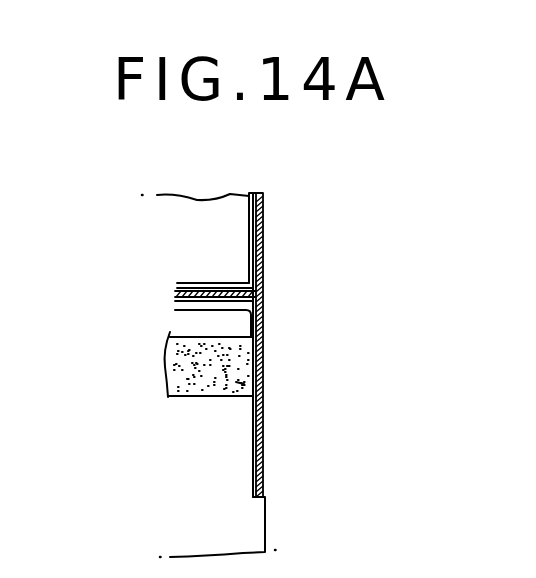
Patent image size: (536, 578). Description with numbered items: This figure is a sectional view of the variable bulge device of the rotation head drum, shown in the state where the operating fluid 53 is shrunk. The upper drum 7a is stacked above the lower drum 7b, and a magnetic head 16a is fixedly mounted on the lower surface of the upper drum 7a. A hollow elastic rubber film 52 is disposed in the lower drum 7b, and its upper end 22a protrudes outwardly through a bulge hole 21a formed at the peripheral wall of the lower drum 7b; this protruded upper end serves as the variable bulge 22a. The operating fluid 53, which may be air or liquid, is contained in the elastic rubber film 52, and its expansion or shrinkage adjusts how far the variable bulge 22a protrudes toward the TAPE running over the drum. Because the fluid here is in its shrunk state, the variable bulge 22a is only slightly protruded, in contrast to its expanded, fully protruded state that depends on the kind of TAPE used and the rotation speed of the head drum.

The adhesive tape TAPE is at (263, 213).
The upper drum 7a is at (237, 242).
The magnetic head 16a is at (258, 296).
The bulge hole 21a is at (253, 328).
The variable bulge 22a is at (258, 368).
The operating fluid 53 is at (242, 383).
The elastic rubber film 52 is at (200, 392).
The lower drum 7b is at (240, 505).